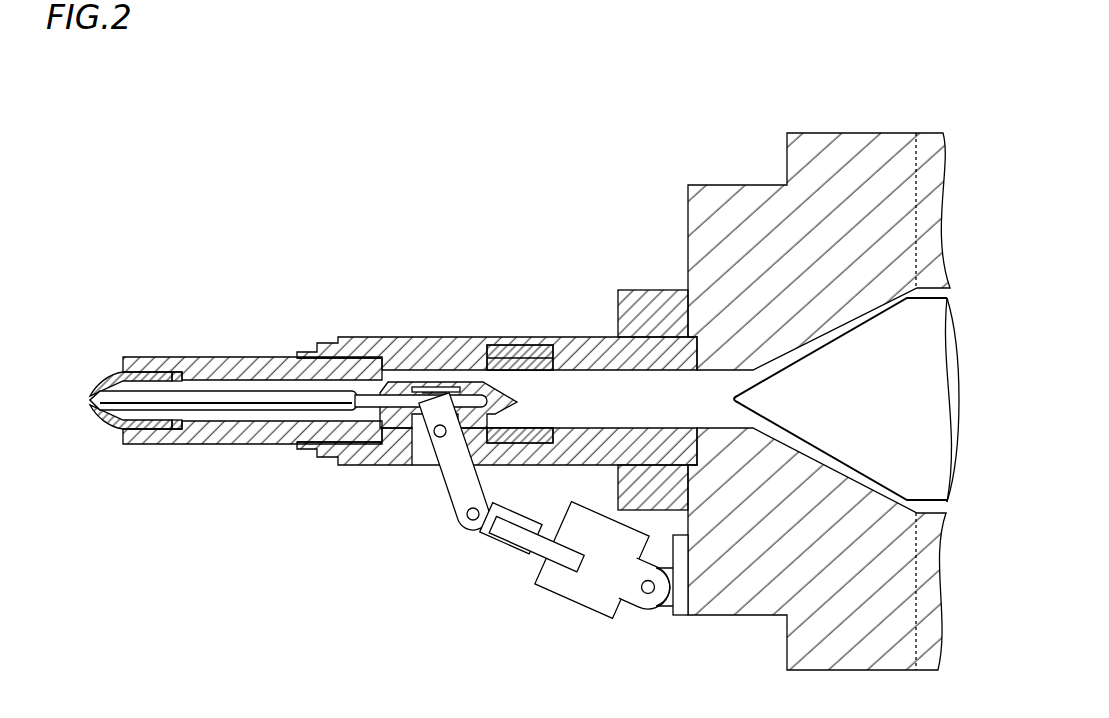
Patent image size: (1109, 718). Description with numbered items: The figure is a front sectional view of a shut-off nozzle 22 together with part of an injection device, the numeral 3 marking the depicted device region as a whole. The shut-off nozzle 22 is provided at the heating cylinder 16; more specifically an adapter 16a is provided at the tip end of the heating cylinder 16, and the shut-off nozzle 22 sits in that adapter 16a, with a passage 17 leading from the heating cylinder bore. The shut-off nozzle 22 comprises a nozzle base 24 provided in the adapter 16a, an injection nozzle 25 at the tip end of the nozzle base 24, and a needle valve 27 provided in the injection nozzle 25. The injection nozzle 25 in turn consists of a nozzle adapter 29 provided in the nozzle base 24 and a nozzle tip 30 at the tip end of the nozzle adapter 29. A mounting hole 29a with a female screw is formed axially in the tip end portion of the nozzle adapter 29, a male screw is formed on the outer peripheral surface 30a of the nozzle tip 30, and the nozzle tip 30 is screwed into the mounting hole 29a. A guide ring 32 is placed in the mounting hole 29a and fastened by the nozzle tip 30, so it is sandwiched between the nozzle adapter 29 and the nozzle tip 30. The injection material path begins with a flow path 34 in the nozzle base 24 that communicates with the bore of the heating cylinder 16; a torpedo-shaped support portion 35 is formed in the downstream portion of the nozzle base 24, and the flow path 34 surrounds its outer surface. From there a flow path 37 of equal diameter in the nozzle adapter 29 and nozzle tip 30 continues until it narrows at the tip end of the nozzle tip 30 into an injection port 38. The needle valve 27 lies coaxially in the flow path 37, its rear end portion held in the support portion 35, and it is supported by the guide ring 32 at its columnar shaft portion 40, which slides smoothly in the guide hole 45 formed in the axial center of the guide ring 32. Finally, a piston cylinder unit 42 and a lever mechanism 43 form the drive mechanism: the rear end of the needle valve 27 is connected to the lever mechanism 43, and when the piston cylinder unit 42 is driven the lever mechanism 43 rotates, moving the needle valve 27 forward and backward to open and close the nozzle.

The nozzle device 3 is at (624, 162).
The heating cylinder 16 is at (930, 133).
The adapter 16a is at (733, 185).
The flow passage liner 17 is at (853, 323).
The shut-off nozzle 22 is at (218, 217).
The nozzle base 24 is at (600, 334).
The injection nozzle 25 is at (192, 298).
The needle valve 27 is at (243, 447).
The nozzle adapter 29 is at (258, 381).
The mounting hole 29a is at (150, 381).
The nozzle tip 30 is at (96, 395).
The outer peripheral surface 30a is at (137, 431).
The guide ring 32 is at (165, 486).
The flow path in a nozzle base 34 is at (574, 381).
The support portion 35 is at (480, 381).
The flow path in an injection nozzle 37 is at (281, 385).
The injection port 38 is at (97, 399).
The shaft portion 40 is at (289, 450).
The piston cylinder unit 42 is at (577, 603).
The lever mechanism 43 is at (447, 487).
The guide hole 45 is at (183, 399).